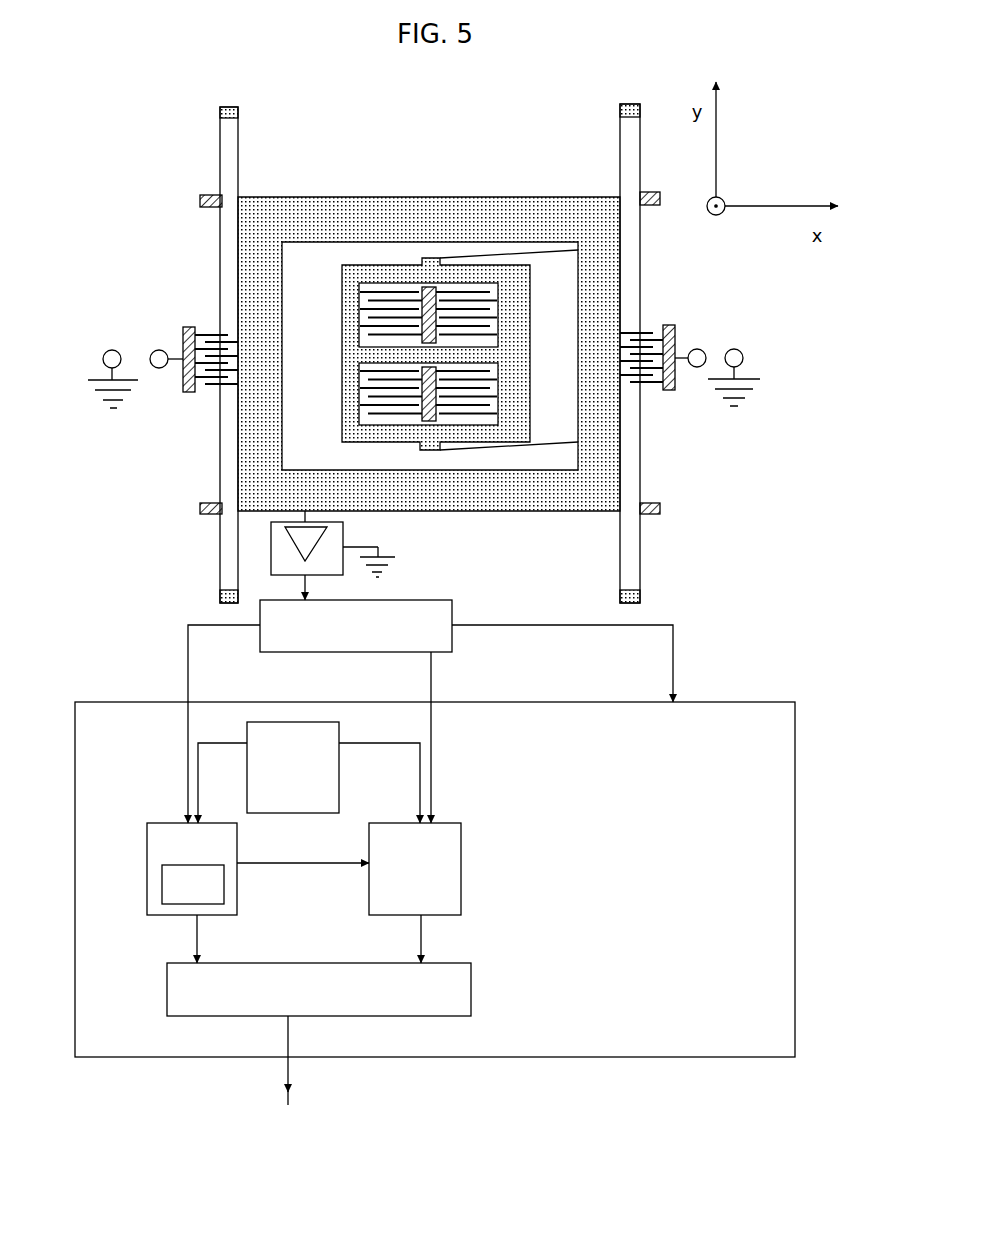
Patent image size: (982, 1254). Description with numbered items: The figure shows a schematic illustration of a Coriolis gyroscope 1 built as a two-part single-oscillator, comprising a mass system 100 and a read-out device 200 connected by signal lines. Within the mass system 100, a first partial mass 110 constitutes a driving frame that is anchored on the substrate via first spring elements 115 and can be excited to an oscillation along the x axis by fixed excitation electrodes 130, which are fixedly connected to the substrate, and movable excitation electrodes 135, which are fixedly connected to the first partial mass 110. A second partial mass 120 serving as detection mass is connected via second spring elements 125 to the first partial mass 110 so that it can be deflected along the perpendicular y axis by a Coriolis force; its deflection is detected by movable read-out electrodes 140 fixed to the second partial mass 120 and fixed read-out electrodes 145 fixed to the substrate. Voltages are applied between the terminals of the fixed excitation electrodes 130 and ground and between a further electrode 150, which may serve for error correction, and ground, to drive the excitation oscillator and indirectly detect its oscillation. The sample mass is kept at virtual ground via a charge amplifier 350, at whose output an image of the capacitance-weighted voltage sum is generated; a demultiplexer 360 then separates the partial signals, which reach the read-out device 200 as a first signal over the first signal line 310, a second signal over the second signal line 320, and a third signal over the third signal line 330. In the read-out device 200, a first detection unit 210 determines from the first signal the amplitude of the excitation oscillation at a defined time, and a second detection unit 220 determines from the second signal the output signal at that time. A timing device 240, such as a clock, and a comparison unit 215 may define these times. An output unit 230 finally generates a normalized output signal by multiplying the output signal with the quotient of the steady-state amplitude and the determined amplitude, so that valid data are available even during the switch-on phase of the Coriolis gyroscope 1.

The Coriolis gyroscope 1 is at (508, 62).
The mass system 100 is at (328, 116).
The first partial mass 110 is at (413, 216).
The first spring elements 115 is at (220, 129).
The second partial mass 120 is at (384, 266).
The second spring elements 125 is at (475, 413).
The fixed excitation electrodes 130 is at (185, 375).
The movable excitation electrodes 135 is at (220, 333).
The movable read-out electrodes 140 is at (430, 418).
The fixed read-out electrodes 145 is at (412, 407).
The further electrode 150 is at (675, 360).
The read-out device 200 is at (500, 702).
The first detection unit 210 is at (169, 823).
The comparison unit 215 is at (193, 884).
The second detection unit 220 is at (461, 845).
The output unit 230 is at (471, 990).
The timing device 240 is at (341, 797).
The first signal line 310 is at (188, 656).
The second signal line 320 is at (428, 681).
The third signal line 330 is at (673, 652).
The charge amplifier 350 is at (343, 533).
The demultiplexer 360 is at (452, 643).